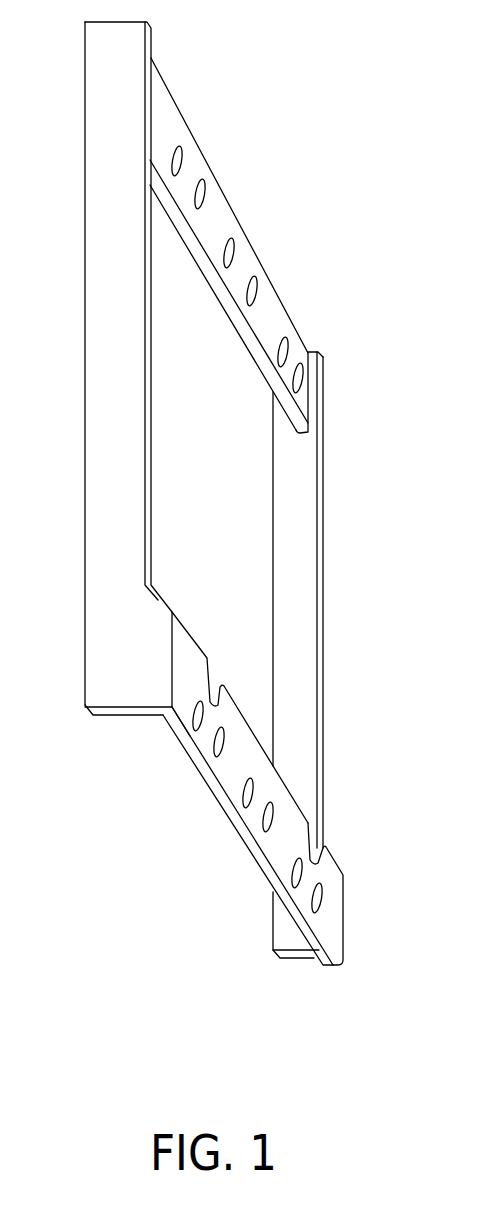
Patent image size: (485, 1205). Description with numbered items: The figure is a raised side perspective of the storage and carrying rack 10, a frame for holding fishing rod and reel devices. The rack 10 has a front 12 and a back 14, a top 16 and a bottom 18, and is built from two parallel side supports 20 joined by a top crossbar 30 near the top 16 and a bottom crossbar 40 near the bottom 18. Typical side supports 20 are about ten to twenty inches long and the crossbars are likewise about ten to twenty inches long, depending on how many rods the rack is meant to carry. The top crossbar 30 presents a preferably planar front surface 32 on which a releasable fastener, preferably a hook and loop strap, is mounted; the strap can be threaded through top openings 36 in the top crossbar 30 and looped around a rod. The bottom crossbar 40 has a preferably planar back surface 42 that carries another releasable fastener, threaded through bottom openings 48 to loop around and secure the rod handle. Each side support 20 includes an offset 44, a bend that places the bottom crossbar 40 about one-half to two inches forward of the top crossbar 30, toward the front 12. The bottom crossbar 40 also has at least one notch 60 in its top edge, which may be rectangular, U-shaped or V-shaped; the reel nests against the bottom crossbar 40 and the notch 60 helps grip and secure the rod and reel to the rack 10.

The storage and carrying rack 10 is at (378, 528).
The front 12 is at (360, 412).
The back 14 is at (83, 345).
The top 16 is at (270, 245).
The bottom 18 is at (252, 771).
The side supports 20 is at (84, 525).
The top crossbar 30 is at (217, 185).
The front surface 32 is at (156, 104).
The top openings 36 is at (292, 340).
The bottom crossbar 40 is at (227, 800).
The back surface 42 is at (172, 718).
The offsets 44 is at (157, 604).
The bottom openings 48 is at (312, 902).
The notch 60 is at (316, 842).